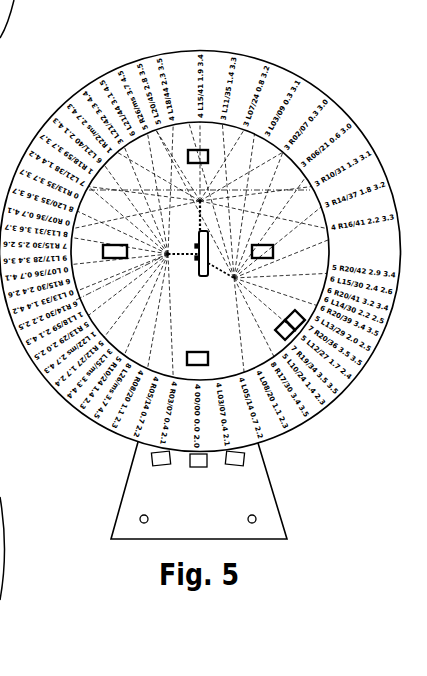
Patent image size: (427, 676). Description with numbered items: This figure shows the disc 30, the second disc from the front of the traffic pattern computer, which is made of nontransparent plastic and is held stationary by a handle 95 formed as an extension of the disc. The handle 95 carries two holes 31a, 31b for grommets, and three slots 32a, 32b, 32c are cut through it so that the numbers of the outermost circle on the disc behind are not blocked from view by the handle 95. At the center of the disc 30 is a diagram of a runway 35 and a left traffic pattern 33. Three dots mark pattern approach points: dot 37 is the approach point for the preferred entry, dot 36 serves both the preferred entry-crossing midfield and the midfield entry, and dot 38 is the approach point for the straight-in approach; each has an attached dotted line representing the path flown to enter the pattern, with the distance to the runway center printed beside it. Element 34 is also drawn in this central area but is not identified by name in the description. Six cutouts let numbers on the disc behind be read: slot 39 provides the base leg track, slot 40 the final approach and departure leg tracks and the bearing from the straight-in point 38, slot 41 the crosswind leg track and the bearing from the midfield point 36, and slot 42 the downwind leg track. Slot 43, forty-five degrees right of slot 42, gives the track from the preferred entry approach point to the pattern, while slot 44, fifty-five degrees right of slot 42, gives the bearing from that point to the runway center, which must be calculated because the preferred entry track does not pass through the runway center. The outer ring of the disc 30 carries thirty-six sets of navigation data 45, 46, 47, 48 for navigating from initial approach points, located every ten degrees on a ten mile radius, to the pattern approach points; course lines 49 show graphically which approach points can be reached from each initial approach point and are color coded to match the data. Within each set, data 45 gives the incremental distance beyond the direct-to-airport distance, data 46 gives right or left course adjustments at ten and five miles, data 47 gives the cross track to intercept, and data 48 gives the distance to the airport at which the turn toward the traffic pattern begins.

The disc 30 is at (298, 207).
The hole 31a is at (148, 517).
The hole 31b is at (248, 517).
The slot 32a is at (165, 465).
The slot 32b is at (202, 467).
The slot 32c is at (240, 465).
The left traffic pattern 33 is at (209, 245).
The one mile point 34 is at (197, 241).
The runway 35 is at (197, 269).
The dot 36 is at (170, 257).
The dot 37 is at (234, 273).
The dot 38 is at (198, 203).
The slot 39 is at (273, 258).
The slot 40 is at (186, 149).
The slot 41 is at (110, 258).
The slot 42 is at (188, 355).
The slot 43 is at (280, 336).
The slot 44 is at (301, 311).
The navigation data 45 is at (331, 247).
The navigation data 46 is at (349, 247).
The navigation data 47 is at (373, 247).
The navigation data 48 is at (391, 247).
The course lines 49 is at (113, 288).
The handle 95 is at (268, 488).